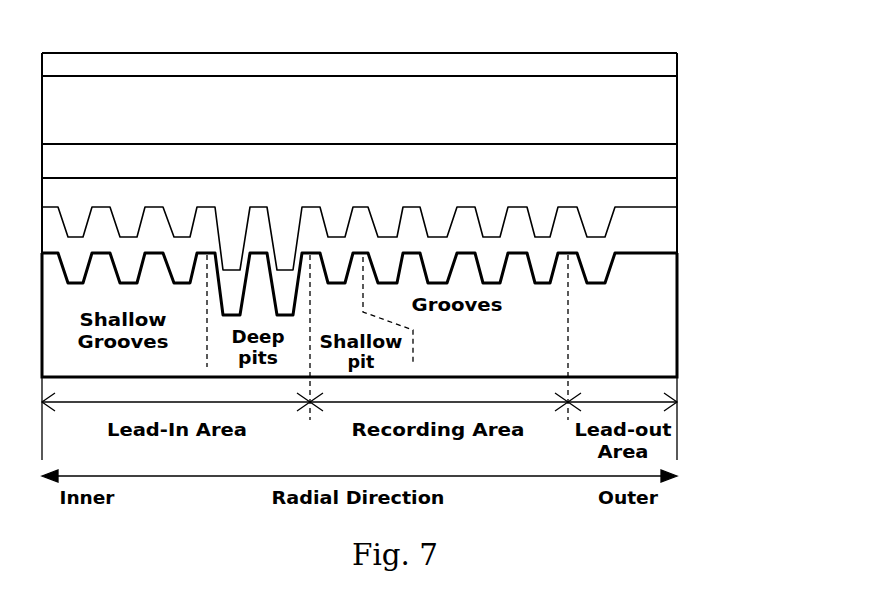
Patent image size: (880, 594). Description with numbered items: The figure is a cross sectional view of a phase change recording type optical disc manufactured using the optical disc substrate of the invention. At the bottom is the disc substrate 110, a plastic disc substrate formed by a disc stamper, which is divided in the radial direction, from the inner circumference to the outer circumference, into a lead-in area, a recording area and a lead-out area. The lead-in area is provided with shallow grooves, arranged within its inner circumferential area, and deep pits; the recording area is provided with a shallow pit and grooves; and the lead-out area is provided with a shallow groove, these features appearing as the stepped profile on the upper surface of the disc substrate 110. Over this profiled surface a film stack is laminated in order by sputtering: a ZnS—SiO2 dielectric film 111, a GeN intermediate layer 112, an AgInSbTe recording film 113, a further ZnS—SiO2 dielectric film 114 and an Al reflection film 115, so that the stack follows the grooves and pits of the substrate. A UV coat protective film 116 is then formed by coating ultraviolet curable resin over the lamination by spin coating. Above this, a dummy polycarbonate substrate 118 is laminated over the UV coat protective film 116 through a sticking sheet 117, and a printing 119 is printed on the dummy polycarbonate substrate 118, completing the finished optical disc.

The disc substrate 110 is at (660, 327).
The ZnS—SiO2 dielectric film 111 is at (398, 257).
The GeN intermediate layer 112 is at (398, 246).
The AgInSbTe recording film 113 is at (665, 227).
The ZnS—SiO2 dielectric film 114 is at (398, 230).
The Al reflection film 115 is at (398, 224).
The UV coat protective film 116 is at (668, 193).
The sticking sheet 117 is at (668, 159).
The dummy polycarbonate substrate 118 is at (668, 110).
The printing 119 is at (668, 64).